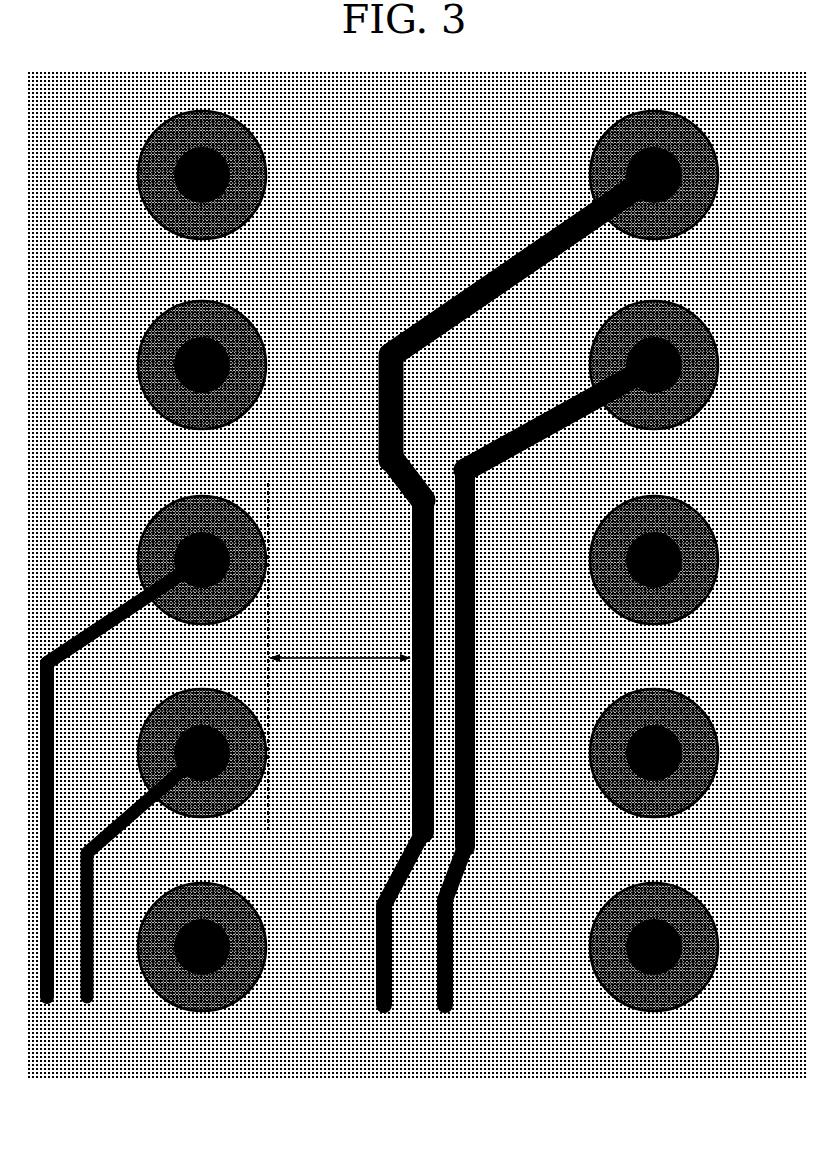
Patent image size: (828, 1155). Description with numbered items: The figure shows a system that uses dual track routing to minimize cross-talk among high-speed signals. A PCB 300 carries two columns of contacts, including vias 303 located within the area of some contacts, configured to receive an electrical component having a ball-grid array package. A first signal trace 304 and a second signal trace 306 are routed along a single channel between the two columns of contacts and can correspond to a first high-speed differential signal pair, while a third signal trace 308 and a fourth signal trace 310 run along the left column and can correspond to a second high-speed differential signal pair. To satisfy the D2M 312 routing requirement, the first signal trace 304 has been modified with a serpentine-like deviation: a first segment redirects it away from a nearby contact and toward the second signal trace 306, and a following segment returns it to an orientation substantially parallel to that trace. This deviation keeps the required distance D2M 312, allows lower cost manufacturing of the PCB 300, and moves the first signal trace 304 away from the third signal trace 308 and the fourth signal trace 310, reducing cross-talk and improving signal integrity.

The PCB 300 is at (56, 61).
The via 303 is at (236, 360).
The first signal trace 304 is at (444, 295).
The second signal trace 306 is at (520, 420).
The third signal trace 308 is at (74, 632).
The fourth signal trace 310 is at (110, 821).
The D2M 312 is at (339, 656).